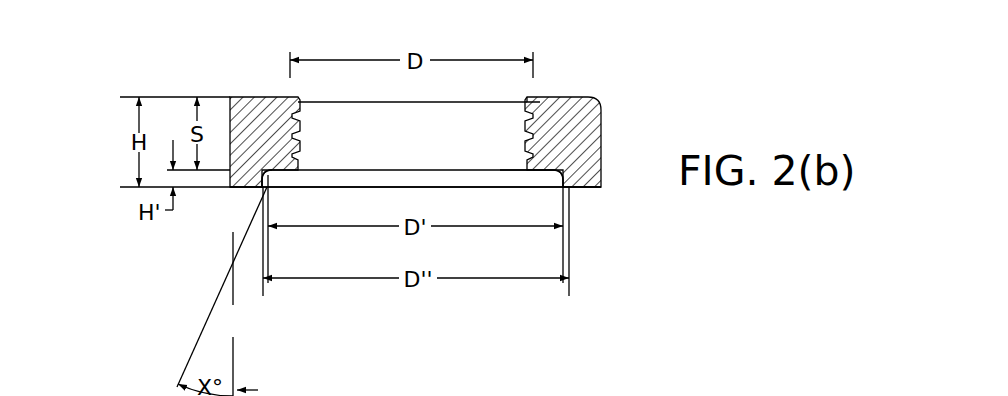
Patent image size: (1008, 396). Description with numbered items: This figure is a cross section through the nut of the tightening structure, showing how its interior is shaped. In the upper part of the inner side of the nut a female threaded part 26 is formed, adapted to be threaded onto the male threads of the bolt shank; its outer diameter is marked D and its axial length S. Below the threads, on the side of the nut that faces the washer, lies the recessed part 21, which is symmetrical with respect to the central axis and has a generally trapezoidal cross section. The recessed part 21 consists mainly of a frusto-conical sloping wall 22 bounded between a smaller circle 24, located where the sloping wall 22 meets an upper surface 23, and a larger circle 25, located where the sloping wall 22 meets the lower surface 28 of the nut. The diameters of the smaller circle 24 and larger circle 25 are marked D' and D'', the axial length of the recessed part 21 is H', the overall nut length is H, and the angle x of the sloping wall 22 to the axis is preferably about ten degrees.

The recessed part 21 is at (492, 178).
The sloping wall 22 is at (263, 190).
The upper surface 23 is at (531, 170).
The smaller circle 24 is at (556, 178).
The larger circle 25 is at (577, 187).
The female threaded part 26 is at (528, 98).
The lower surface 28 is at (248, 188).